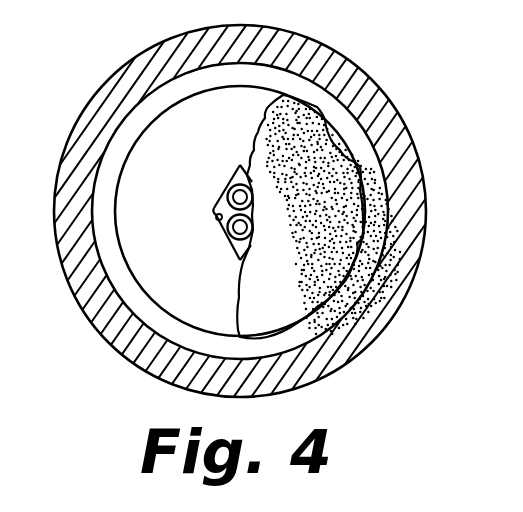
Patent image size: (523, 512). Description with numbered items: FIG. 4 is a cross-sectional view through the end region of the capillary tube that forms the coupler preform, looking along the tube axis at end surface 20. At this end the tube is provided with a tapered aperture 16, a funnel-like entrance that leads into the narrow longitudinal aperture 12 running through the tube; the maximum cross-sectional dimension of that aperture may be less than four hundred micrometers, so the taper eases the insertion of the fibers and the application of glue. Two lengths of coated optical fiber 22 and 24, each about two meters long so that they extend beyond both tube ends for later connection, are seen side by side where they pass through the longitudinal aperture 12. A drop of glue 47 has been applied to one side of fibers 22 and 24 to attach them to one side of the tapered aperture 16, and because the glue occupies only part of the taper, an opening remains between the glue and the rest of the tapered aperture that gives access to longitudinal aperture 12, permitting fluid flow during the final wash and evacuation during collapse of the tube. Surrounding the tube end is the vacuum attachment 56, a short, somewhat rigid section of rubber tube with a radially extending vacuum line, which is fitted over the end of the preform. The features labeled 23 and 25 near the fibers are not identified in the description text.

The longitudinal aperture 12 is at (216, 221).
The tapered aperture 16 is at (232, 135).
The end surface 20 is at (370, 173).
The coated optical fiber 22 is at (261, 186).
The upper bracket member 23 is at (233, 187).
The coated optical fiber 24 is at (262, 226).
The lower bracket member 25 is at (232, 240).
The glue 47 is at (260, 290).
The vacuum attachment 56 is at (378, 90).